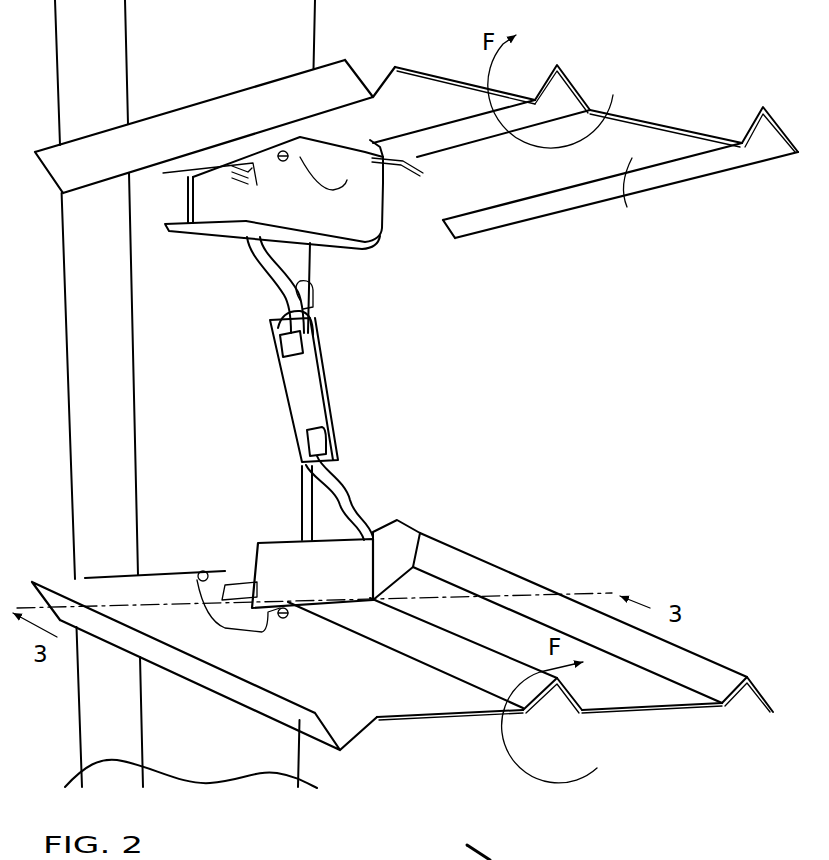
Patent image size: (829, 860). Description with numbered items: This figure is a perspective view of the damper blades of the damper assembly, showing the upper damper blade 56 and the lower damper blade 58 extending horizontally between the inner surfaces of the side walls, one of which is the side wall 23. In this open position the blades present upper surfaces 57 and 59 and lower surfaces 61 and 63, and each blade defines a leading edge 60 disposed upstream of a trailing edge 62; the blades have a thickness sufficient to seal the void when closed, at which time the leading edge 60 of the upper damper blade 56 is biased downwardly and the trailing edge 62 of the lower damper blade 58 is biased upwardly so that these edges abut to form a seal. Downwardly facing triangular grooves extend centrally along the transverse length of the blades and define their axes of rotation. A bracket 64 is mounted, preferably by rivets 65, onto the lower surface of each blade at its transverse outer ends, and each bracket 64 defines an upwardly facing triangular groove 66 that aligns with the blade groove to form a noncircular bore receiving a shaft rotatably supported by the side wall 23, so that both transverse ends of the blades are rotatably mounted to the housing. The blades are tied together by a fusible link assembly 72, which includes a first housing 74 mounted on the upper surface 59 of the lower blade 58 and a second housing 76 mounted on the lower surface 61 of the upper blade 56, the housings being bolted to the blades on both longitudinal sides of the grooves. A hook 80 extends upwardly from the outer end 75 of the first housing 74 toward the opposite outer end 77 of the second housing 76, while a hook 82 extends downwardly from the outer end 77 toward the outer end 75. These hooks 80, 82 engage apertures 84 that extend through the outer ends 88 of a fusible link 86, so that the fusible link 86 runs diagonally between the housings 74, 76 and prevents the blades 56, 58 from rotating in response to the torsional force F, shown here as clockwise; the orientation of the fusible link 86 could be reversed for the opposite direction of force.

The side wall 23 is at (184, 394).
The upper damper blade 56 is at (563, 62).
The upper surface of upper blade 57 is at (657, 120).
The lower damper blade 58 is at (580, 713).
The upper surface of lower blade 59 is at (448, 602).
The leading edge 60 is at (703, 180).
The lower surface of upper blade 61 is at (638, 198).
The trailing edge 62 is at (168, 110).
The lower surface of lower blade 63 is at (413, 713).
The bracket 64 is at (415, 168).
The rivet 65 is at (282, 161).
The triangular groove of bracket 66 is at (368, 183).
The fusible link assembly 72 is at (272, 392).
The first housing 74 is at (357, 572).
The outer end of first housing 75 is at (390, 520).
The second housing 76 is at (330, 224).
The outer end of second housing 77 is at (205, 235).
The hook 80 is at (303, 472).
The hook 82 is at (307, 288).
The aperture 84 is at (307, 340).
The fusible link 86 is at (335, 388).
The outer end of fusible link 88 is at (312, 317).